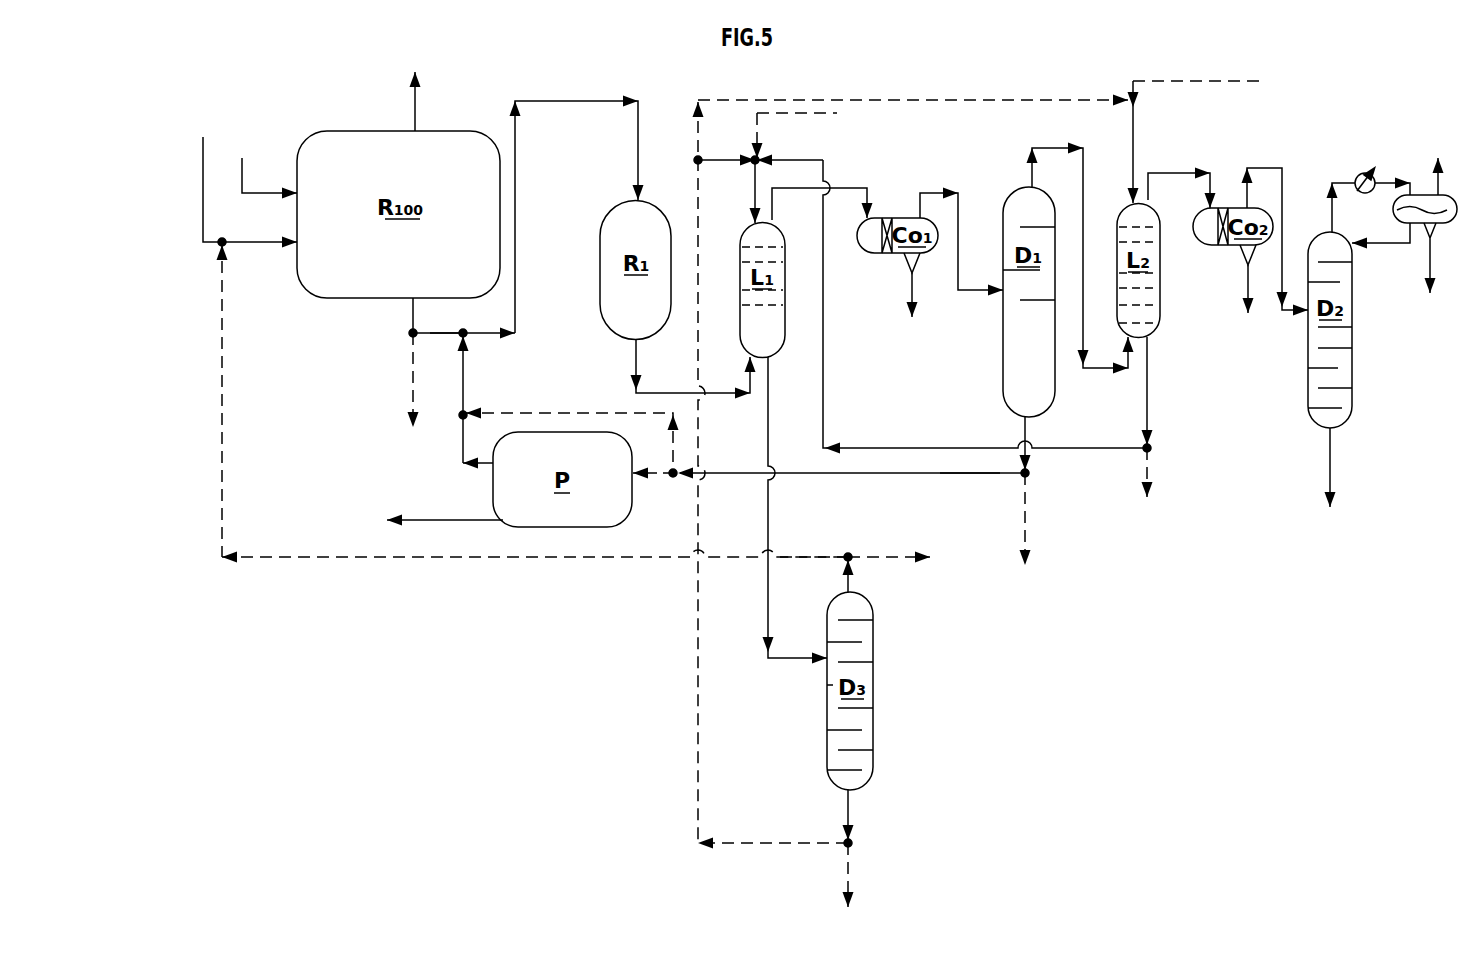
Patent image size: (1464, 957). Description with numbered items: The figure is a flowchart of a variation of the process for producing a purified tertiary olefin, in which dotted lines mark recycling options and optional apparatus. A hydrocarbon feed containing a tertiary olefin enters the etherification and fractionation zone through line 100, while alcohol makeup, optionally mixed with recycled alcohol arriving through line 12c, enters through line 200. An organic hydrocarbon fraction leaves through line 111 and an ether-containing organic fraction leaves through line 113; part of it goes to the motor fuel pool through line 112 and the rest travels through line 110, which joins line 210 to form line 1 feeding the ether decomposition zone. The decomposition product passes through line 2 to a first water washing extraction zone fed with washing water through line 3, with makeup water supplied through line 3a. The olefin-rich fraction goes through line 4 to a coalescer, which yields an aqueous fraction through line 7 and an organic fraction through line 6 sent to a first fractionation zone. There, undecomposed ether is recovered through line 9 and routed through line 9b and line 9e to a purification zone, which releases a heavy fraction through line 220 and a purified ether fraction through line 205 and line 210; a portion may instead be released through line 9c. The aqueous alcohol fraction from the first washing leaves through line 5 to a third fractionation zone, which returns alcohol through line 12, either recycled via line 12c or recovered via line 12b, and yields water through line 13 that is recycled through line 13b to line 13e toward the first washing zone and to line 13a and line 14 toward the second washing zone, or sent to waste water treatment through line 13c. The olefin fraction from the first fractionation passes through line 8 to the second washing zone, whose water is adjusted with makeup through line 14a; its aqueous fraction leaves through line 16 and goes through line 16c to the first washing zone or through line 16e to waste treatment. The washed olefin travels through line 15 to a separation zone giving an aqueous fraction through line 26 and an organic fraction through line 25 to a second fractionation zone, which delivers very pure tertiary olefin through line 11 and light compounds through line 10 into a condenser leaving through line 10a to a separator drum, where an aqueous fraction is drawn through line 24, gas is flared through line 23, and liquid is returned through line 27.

The hydrocarbon feed line 100 is at (242, 172).
The organic hydrocarbon fraction line 111 is at (413, 103).
The alcohol makeup line 200 is at (262, 243).
The ether decomposition feed line 1 is at (515, 268).
The ether-containing organic fraction line 113 is at (413, 318).
The motor fuel pool line 112 is at (410, 373).
The ether fraction line to decomposition 110 is at (437, 335).
The purified ether line 210 is at (467, 383).
The lighter fraction outlet line 205 is at (463, 457).
The heavy fraction outlet line 220 is at (455, 518).
The decomposition product line 2 is at (635, 362).
The aqueous fraction recycle line to L1 13e is at (718, 160).
The washing water line 3 is at (755, 190).
The makeup water line 3a is at (793, 113).
The tertiary olefin fraction line 4 is at (837, 188).
The aqueous fraction recycle line to L2 13a is at (947, 100).
The purified tertiary olefin organic fraction line 6 is at (953, 192).
The aqueous fraction outlet line 7 is at (910, 290).
The organic fraction line 8 is at (1055, 148).
The undecomposed ether fraction line 9 is at (1025, 430).
The ether fraction recycle line 9b is at (967, 475).
The ether fraction release line 9c is at (1023, 510).
The purification zone feed line 9e is at (647, 477).
The aqueous alcohol fraction line 5 is at (768, 423).
The alcohol fraction line 12 is at (850, 585).
The alcohol recovery line 12b is at (895, 552).
The alcohol recycle line 12c is at (833, 552).
The aqueous fraction line 13 is at (850, 807).
The aqueous fraction recycle line 13b is at (803, 845).
The waste water line 13c is at (848, 868).
The L2 water inlet line 14 is at (1140, 138).
The L2 makeup water line 14a is at (1204, 81).
The tertiary olefin fraction line from L2 15 is at (1217, 170).
The organic liquid fraction line 25 is at (1275, 221).
The aqueous liquid fraction line 26 is at (1247, 278).
The aqueous alcohol fraction line from L2 16 is at (1148, 400).
The aqueous fraction recycle line to L1 16c is at (1105, 447).
The aqueous fraction waste line 16e is at (1147, 470).
The light fraction line 10 is at (1353, 177).
The condensed light fraction line 10a is at (1392, 180).
The gaseous fraction evacuation line 23 is at (1433, 187).
The aqueous fraction recovery line 24 is at (1427, 277).
The liquid fraction return line 27 is at (1380, 247).
The pure tertiary olefin line 11 is at (1327, 463).